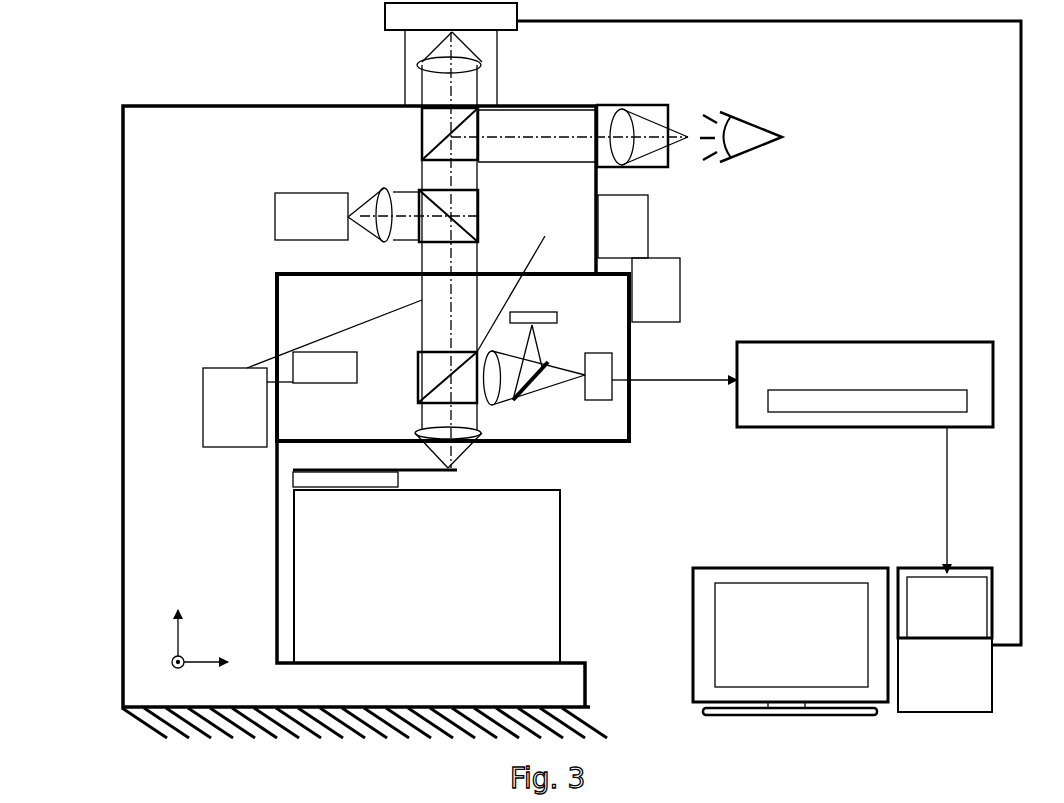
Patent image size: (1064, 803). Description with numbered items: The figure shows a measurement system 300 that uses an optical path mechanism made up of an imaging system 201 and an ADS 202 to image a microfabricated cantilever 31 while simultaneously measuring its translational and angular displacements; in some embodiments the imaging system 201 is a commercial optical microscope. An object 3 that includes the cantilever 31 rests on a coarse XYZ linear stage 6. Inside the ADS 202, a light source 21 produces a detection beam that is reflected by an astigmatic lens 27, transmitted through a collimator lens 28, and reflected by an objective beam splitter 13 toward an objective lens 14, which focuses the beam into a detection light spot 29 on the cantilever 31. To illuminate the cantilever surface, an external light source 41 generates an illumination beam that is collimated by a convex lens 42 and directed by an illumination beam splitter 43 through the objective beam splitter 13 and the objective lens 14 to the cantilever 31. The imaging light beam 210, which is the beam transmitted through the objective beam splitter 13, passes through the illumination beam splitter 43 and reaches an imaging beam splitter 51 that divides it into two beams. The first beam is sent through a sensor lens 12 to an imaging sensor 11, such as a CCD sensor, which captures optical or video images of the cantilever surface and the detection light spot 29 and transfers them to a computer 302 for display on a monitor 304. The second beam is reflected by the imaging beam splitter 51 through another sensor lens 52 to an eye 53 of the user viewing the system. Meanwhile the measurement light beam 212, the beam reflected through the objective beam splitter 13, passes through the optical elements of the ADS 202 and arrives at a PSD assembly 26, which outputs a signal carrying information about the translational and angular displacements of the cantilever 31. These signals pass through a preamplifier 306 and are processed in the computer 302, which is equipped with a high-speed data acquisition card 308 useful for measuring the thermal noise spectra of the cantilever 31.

The measurement system 300 is at (125, 83).
The imaging system 201 is at (177, 214).
The imaging sensor 11 is at (395, 20).
The sensor lens 12 is at (437, 68).
The imaging beam splitter 51 is at (422, 132).
The sensor lens 52 is at (628, 150).
The eye 53 is at (745, 148).
The illumination beam splitter 43 is at (478, 220).
The convex lens 42 is at (378, 240).
The external light source 41 is at (295, 225).
The measurement light beam 212 is at (593, 237).
The ADS 202 is at (335, 434).
The imaging light beam 210 is at (312, 373).
The objective beam splitter 13 is at (433, 372).
The collimator lens 28 is at (497, 400).
The light source 21 is at (547, 312).
The astigmatic lens 27 is at (515, 400).
The PSD assembly 26 is at (600, 390).
The objective lens 14 is at (465, 437).
The detection light spot 29 is at (443, 465).
The object 3 is at (355, 475).
The cantilever 31 is at (435, 473).
The coarse XYZ linear stage 6 is at (535, 548).
The preamplifier 306 is at (880, 333).
The high-speed data acquisition card 308 is at (923, 590).
The computer 302 is at (973, 678).
The monitor 304 is at (760, 678).